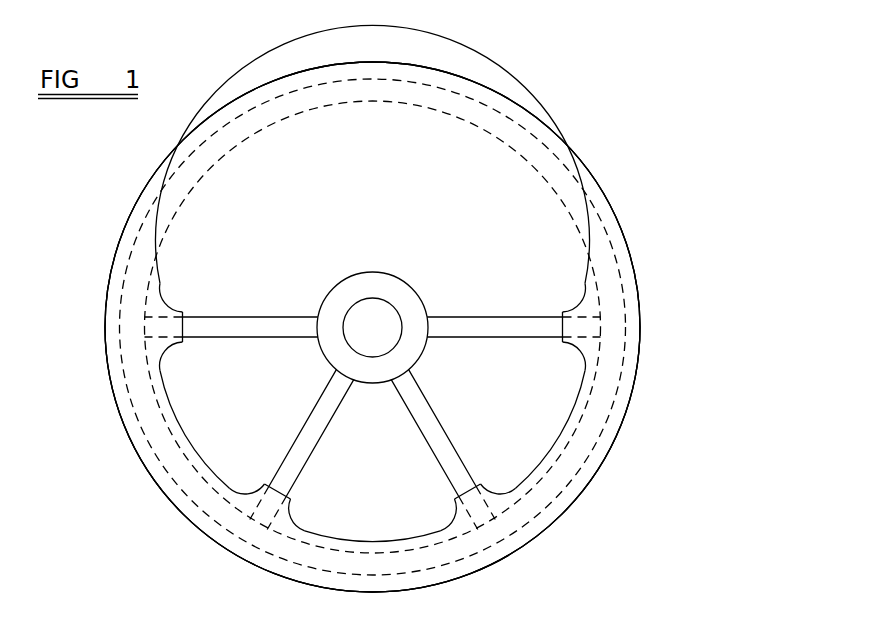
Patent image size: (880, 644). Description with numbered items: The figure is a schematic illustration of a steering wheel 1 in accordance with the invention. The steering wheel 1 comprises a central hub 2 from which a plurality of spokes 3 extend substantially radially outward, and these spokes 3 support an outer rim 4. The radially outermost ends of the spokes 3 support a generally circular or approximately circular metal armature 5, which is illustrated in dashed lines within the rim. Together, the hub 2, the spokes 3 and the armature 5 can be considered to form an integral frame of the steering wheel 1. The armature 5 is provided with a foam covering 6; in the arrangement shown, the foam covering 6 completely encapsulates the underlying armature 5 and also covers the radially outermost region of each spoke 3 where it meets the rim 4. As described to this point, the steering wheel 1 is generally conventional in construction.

The steering wheel 1 is at (544, 110).
The central hub 2 is at (377, 302).
The spokes 3 is at (508, 333).
The outer rim 4 is at (645, 337).
The metal armature 5 is at (577, 472).
The foam covering 6 is at (530, 543).